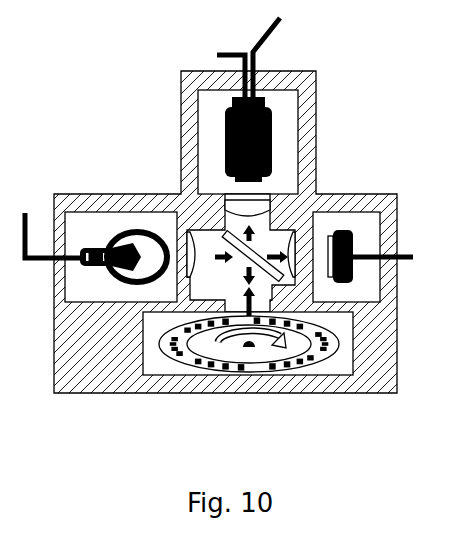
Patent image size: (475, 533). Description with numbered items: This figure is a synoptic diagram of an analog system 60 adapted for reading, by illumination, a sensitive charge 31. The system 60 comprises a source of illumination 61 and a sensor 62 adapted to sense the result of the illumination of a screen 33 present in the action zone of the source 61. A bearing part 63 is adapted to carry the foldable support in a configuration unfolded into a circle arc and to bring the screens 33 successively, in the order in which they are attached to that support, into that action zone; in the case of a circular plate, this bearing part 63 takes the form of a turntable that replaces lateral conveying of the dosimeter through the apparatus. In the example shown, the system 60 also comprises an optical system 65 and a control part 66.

The optical detection device 60 is at (402, 141).
The light source / lamp 61 is at (135, 232).
The photomultiplier 62 is at (265, 160).
The code track of disc 63 is at (332, 358).
The beam splitter 65 is at (266, 242).
The detector 66 is at (350, 284).
The code disc 31 is at (167, 359).
The rotation axis / hub 33 is at (242, 324).